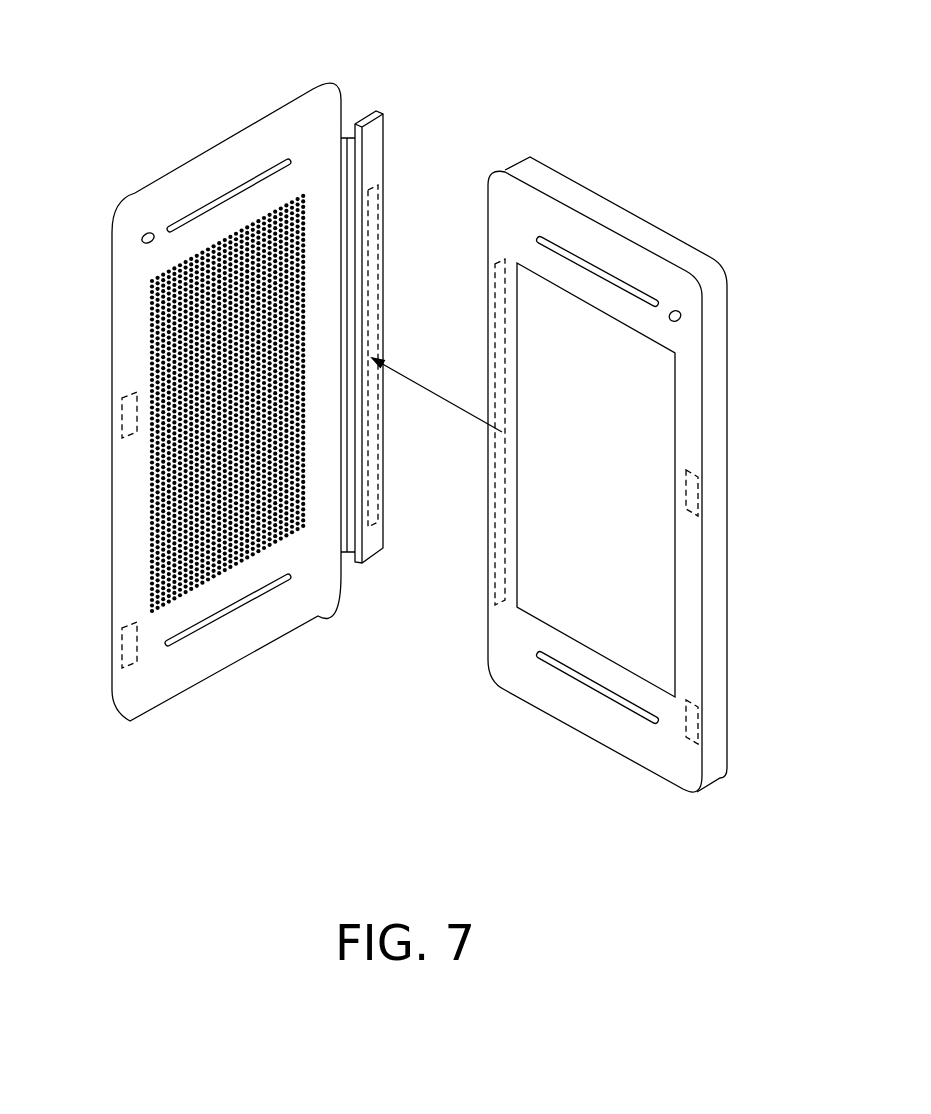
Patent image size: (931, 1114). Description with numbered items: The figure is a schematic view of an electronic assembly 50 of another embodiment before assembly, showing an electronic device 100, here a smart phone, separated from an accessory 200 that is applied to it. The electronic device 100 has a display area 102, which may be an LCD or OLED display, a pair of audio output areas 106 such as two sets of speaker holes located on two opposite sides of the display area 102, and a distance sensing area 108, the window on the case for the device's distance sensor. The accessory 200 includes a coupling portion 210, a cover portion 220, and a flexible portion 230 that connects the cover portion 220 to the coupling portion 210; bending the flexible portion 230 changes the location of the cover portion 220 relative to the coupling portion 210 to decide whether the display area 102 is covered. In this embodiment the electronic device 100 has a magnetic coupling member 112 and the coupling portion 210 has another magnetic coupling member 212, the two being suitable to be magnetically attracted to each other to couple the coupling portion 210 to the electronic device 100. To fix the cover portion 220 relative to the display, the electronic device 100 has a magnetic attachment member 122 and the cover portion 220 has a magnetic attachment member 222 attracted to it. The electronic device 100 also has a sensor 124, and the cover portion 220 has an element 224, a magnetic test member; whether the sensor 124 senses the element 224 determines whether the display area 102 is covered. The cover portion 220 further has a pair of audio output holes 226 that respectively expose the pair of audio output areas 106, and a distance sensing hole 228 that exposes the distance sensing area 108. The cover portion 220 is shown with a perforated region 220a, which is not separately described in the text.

The electronic assembly 50 is at (636, 67).
The electronic device 100 is at (723, 216).
The display area 102 is at (650, 563).
The audio output areas 106 is at (568, 258).
The distance sensing area 108 is at (681, 317).
The magnetic coupling member 112 is at (500, 287).
The magnetic attachment member 122 is at (700, 487).
The sensor 124 is at (702, 722).
The accessory 200 is at (456, 111).
The coupling portion 210 is at (387, 128).
The magnetic coupling member 212 is at (373, 213).
The cover portion 220 is at (215, 142).
The perforated region 220a is at (152, 283).
The magnetic attachment member 222 is at (118, 413).
The element 224 is at (118, 645).
The audio output holes 226 is at (250, 184).
The distance sensing hole 228 is at (152, 236).
The flexible portion 230 is at (343, 133).